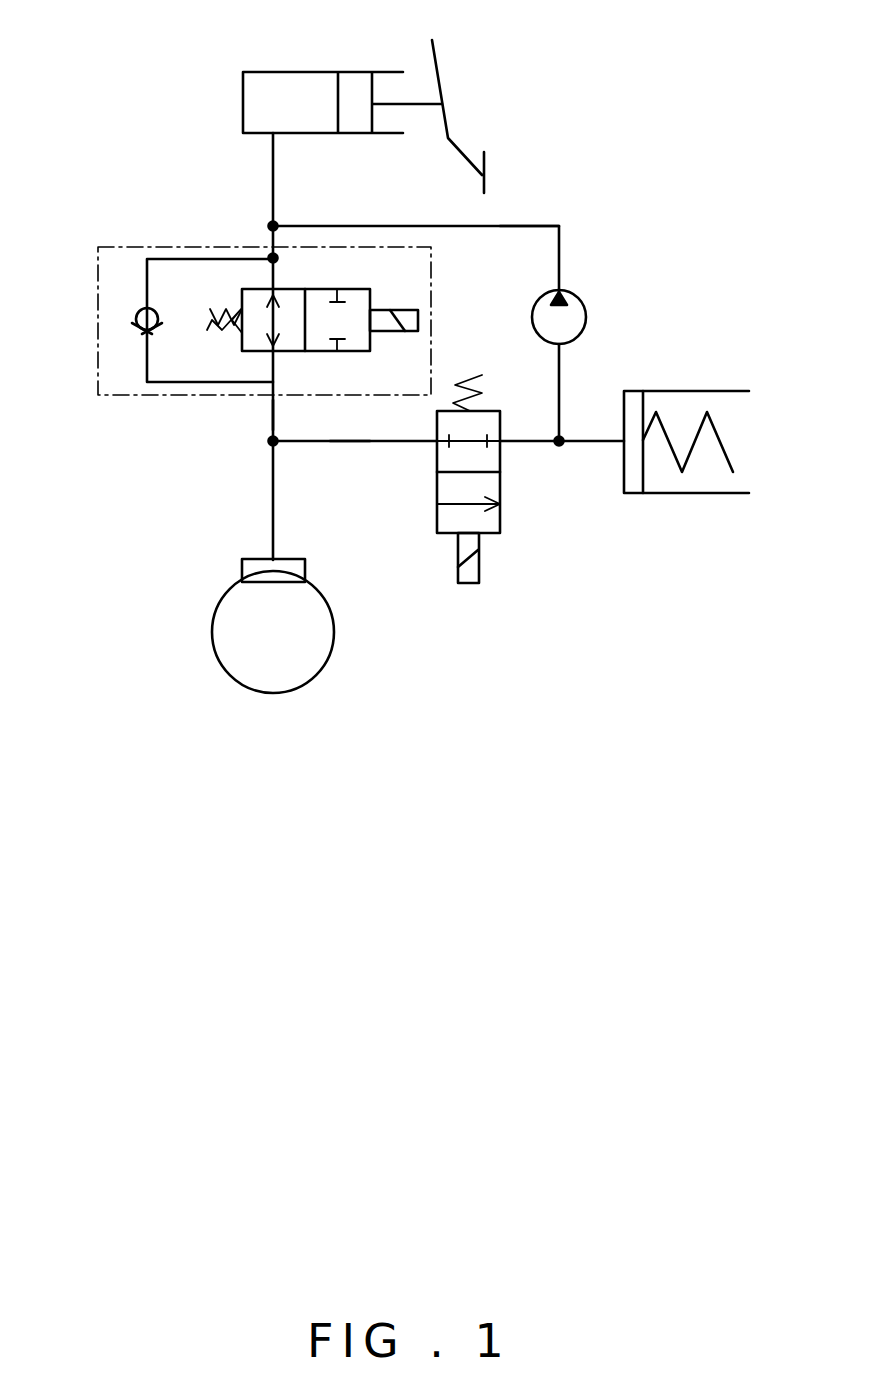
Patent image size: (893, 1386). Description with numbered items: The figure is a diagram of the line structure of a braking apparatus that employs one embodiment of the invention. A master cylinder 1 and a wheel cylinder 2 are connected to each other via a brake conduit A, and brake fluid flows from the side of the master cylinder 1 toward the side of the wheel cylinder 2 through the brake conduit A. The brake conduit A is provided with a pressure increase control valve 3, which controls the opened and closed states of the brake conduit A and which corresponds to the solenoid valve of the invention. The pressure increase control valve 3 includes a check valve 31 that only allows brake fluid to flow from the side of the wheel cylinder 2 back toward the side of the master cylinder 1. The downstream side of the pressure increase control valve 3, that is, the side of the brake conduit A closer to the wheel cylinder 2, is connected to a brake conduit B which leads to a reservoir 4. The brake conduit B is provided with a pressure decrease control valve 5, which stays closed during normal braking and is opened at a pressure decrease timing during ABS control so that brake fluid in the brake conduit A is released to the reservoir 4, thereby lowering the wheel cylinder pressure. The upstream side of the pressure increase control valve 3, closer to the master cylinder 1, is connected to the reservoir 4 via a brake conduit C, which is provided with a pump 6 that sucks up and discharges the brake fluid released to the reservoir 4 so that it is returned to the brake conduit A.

The master cylinder 1 is at (303, 72).
The wheel cylinder 2 is at (260, 563).
The pressure increase control valve 3 is at (233, 283).
The check valve 31 is at (135, 320).
The reservoir 4 is at (681, 391).
The pressure decrease control valve 5 is at (500, 485).
The pump 6 is at (575, 292).
The brake conduit A is at (273, 417).
The brake conduit B is at (348, 443).
The brake conduit C is at (537, 225).